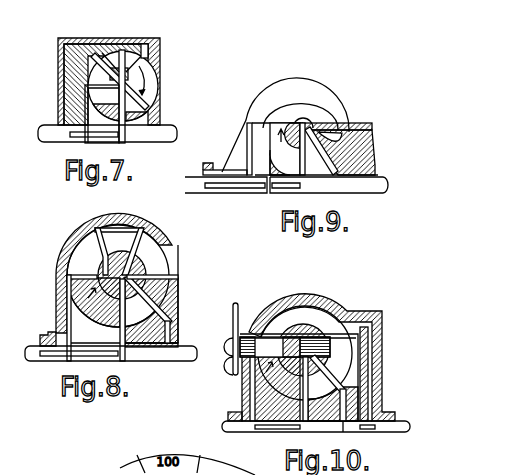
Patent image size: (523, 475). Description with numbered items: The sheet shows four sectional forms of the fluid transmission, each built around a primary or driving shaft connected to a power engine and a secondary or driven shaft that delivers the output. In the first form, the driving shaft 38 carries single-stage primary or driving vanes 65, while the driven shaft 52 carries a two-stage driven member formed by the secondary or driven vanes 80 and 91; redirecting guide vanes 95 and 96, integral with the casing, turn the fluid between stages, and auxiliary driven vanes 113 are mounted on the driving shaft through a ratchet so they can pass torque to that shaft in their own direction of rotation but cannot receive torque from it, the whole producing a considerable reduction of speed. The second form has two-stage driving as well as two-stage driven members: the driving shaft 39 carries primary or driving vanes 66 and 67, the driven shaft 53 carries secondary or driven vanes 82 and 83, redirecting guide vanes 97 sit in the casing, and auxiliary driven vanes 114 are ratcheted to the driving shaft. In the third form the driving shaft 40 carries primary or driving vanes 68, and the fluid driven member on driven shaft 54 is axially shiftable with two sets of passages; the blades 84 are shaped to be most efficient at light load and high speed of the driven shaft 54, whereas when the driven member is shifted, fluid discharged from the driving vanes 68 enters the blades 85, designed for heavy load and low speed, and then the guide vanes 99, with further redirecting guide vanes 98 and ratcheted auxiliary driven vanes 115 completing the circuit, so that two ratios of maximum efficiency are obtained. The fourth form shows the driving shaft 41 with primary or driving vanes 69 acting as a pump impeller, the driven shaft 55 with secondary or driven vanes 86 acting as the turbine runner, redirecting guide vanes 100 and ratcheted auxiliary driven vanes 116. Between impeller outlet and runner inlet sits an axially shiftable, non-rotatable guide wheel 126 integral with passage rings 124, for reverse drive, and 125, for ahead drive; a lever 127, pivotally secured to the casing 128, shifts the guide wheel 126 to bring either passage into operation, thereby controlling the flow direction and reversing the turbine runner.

In FIG. 7, the secondary or driven vanes 80 is at (98, 72).
In FIG. 7, the redirecting guide vanes 95 is at (116, 54).
In FIG. 7, the secondary or driven vanes 91 is at (144, 47).
In FIG. 7, the redirecting guide vanes 96 is at (156, 76).
In FIG. 7, the auxiliary driven vanes 113 is at (150, 104).
In FIG. 7, the primary or driving vanes 65 is at (113, 109).
In FIG. 7, the primary or driving shaft 38 is at (165, 131).
In FIG. 7, the secondary or driven shaft 52 is at (58, 134).
In FIG. 9, the slow speed turbine blades 85 is at (318, 94).
In FIG. 9, the high speed turbine blades 84 is at (322, 114).
In FIG. 9, the redirecting guide vanes 98 is at (355, 124).
In FIG. 9, the redirecting guide vanes 99 is at (362, 142).
In FIG. 9, the auxiliary driven vanes 115 is at (364, 157).
In FIG. 9, the primary or driving vanes 68 is at (296, 165).
In FIG. 9, the secondary or driven shaft 54 is at (226, 188).
In FIG. 9, the primary or driving shaft 40 is at (380, 185).
In FIG. 8, the secondary or driven vanes 82 is at (84, 252).
In FIG. 8, the secondary or driven vanes 83 is at (158, 252).
In FIG. 8, the primary or driving vanes 67 is at (122, 235).
In FIG. 8, the auxiliary driven vanes 114 is at (148, 318).
In FIG. 8, the redirecting guide vanes 97 is at (170, 296).
In FIG. 8, the primary or driving vanes 66 is at (78, 292).
In FIG. 8, the primary or driving shaft 39 is at (172, 348).
In FIG. 8, the secondary or driven shaft 53 is at (40, 355).
In FIG. 10, the secondary or driven vanes 86 is at (318, 314).
In FIG. 10, the auxiliary driven vanes 116 is at (382, 377).
In FIG. 10, the redirecting guide vanes 100 is at (348, 351).
In FIG. 10, the primary or driving vanes 69 is at (293, 394).
In FIG. 10, the reverse guide vane passage ring 124 is at (265, 343).
In FIG. 10, the ahead guide vane passage ring 125 is at (285, 343).
In FIG. 10, the guide wheel 126 is at (243, 336).
In FIG. 10, the lever 127 is at (235, 304).
In FIG. 10, the casing 128 is at (243, 376).
In FIG. 10, the primary or driving shaft 41 is at (237, 425).
In FIG. 10, the secondary or driven shaft 55 is at (401, 422).